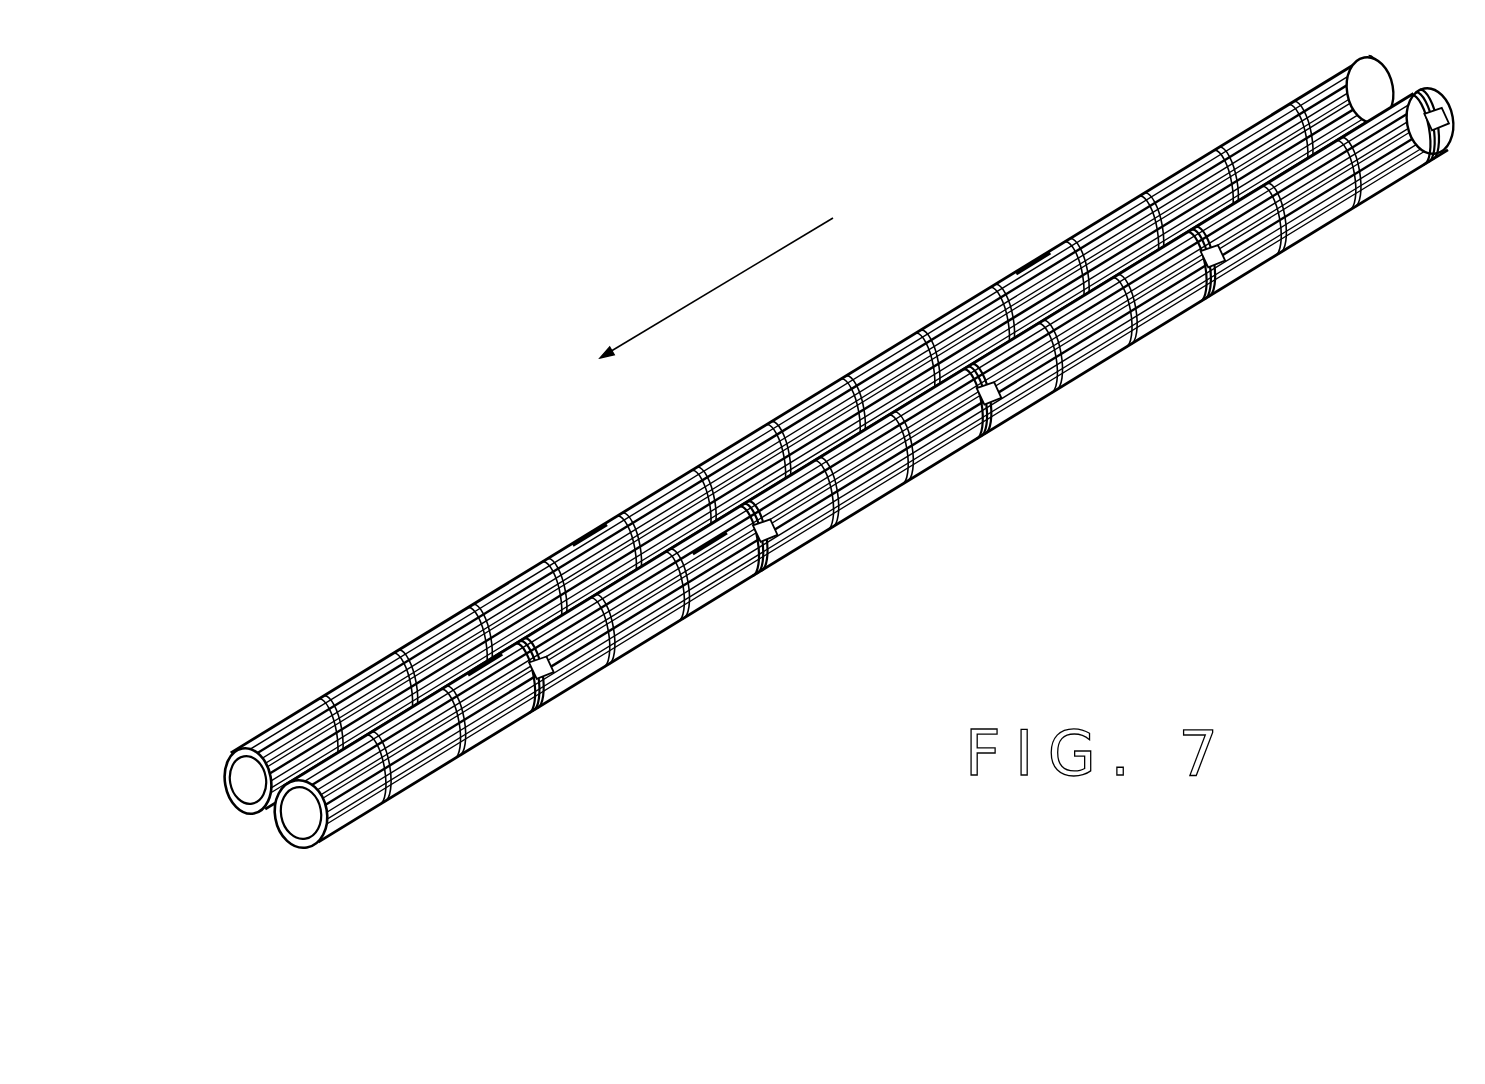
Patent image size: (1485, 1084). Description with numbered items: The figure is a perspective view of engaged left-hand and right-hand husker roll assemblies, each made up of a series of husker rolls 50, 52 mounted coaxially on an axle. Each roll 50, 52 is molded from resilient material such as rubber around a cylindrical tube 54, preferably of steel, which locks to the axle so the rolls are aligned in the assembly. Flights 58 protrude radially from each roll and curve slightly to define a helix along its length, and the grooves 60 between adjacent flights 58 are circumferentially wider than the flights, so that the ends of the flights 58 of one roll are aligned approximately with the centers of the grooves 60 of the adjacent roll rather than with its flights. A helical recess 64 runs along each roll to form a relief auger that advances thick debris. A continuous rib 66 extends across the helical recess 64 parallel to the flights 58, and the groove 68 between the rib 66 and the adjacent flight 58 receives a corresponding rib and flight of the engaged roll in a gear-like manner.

The husker roll 50 is at (330, 677).
The husker roll 52 is at (478, 762).
The cylindrical tube 54 is at (283, 826).
The flights 58 is at (538, 704).
The grooves 60 is at (583, 640).
The helical recess 64 is at (603, 520).
The rib 66 is at (500, 580).
The groove 68 is at (1043, 283).